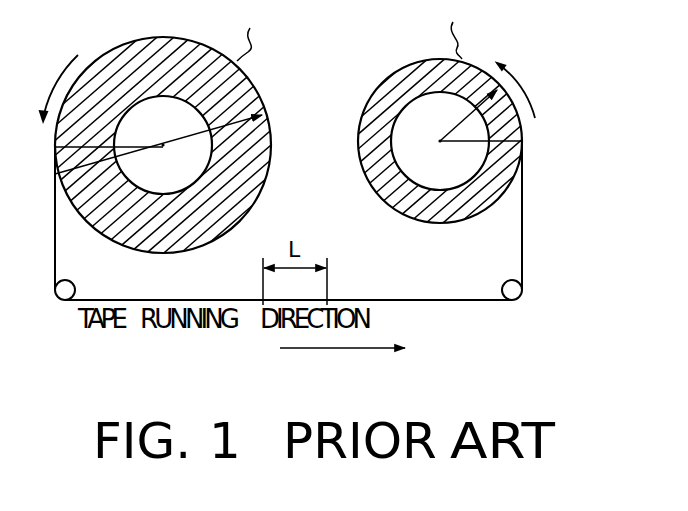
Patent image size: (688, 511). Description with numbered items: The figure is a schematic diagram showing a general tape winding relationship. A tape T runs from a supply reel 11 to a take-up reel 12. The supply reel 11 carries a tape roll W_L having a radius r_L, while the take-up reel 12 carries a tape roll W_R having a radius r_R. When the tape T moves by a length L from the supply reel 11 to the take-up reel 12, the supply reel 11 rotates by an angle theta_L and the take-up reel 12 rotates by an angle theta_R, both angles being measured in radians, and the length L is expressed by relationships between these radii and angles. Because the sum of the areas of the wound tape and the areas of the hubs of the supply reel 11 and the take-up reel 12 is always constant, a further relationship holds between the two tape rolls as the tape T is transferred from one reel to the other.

The supply reel 11 is at (190, 170).
The take-up reel 12 is at (427, 170).
The tape T is at (522, 243).